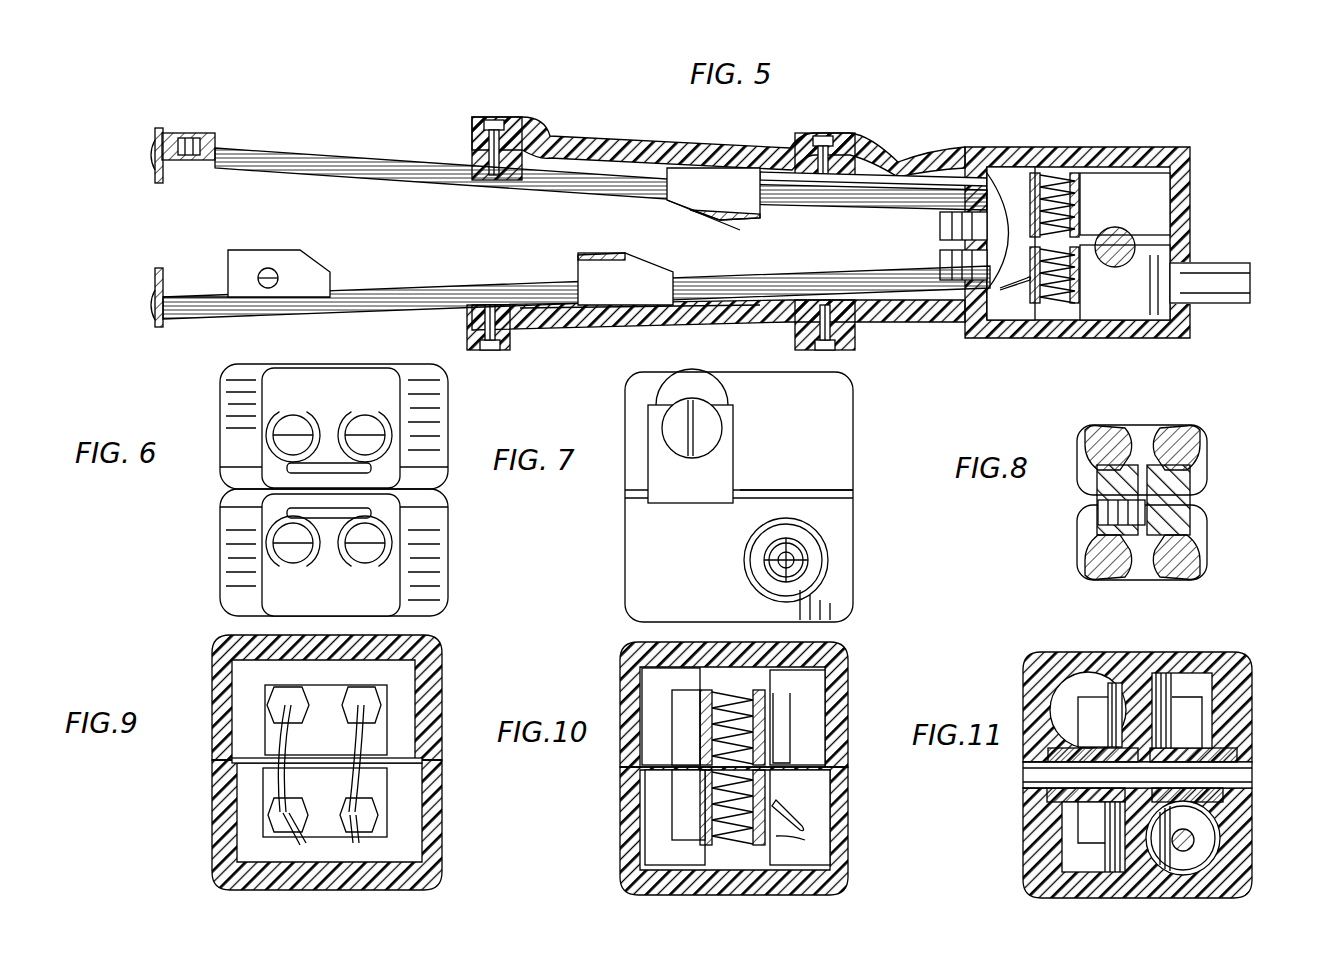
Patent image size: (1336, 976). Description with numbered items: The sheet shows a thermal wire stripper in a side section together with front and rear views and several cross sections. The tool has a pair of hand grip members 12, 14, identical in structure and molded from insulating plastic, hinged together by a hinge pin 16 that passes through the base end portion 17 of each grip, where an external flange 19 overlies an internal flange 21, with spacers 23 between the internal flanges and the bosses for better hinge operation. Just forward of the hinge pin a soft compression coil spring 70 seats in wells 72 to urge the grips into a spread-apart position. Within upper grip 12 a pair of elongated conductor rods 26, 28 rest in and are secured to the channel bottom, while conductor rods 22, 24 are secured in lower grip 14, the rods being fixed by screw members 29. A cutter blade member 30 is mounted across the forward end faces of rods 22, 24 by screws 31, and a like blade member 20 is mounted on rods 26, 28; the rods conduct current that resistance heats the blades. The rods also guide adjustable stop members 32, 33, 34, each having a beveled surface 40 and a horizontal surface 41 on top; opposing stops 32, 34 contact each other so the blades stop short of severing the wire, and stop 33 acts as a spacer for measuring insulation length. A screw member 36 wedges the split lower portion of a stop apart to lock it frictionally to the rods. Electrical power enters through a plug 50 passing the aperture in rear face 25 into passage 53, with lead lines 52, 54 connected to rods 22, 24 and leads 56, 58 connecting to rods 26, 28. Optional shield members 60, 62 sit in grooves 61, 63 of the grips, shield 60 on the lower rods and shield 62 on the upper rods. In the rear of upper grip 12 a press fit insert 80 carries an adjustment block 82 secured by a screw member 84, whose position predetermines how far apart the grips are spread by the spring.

In FIG. 5, the hand grip member 12 is at (612, 148).
In FIG. 6, the hand grip member 12 is at (222, 393).
In FIG. 7, the hand grip member 12 is at (627, 392).
In FIG. 9, the hand grip member 12 is at (442, 680).
In FIG. 10, the hand grip member 12 is at (848, 662).
In FIG. 11, the hand grip member 12 is at (1025, 665).
In FIG. 5, the hand grip member 14 is at (620, 330).
In FIG. 6, the hand grip member 14 is at (222, 570).
In FIG. 7, the hand grip member 14 is at (627, 550).
In FIG. 9, the hand grip member 14 is at (442, 835).
In FIG. 10, the hand grip member 14 is at (620, 866).
In FIG. 11, the hand grip member 14 is at (1025, 873).
In FIG. 5, the hinge pin 16 is at (1112, 262).
In FIG. 11, the hinge pin 16 is at (1252, 775).
In FIG. 5, the base end portion 17 is at (1075, 147).
In FIG. 6, the base end portion 17 is at (325, 364).
In FIG. 7, the base end portion 17 is at (660, 620).
In FIG. 9, the base end portion 17 is at (250, 636).
In FIG. 10, the base end portion 17 is at (640, 643).
In FIG. 11, the base end portion 17 is at (1132, 634).
In FIG. 9, the external flange 19 is at (212, 780).
In FIG. 10, the external flange 19 is at (620, 770).
In FIG. 11, the external flange 19 is at (1252, 753).
In FIG. 5, the blade member 20 is at (160, 168).
In FIG. 6, the blade member 20 is at (264, 472).
In FIG. 8, the blade member 20 is at (1208, 468).
In FIG. 11, the internal flange 21 is at (1048, 758).
In FIG. 8, the conductor rod 22 is at (1175, 578).
In FIG. 9, the conductor rod 22 is at (378, 812).
In FIG. 5, the spacer 23 is at (1135, 240).
In FIG. 11, the spacer 23 is at (1202, 742).
In FIG. 5, the conductor rod 24 is at (395, 268).
In FIG. 8, the conductor rod 24 is at (1105, 578).
In FIG. 9, the conductor rod 24 is at (296, 800).
In FIG. 5, the rear face 25 is at (1183, 255).
In FIG. 7, the rear face 25 is at (875, 512).
In FIG. 8, the conductor rod 26 is at (1182, 428).
In FIG. 9, the conductor rod 26 is at (365, 688).
In FIG. 5, the conductor rod 28 is at (344, 152).
In FIG. 8, the conductor rod 28 is at (1105, 428).
In FIG. 9, the conductor rod 28 is at (290, 688).
In FIG. 5, the screw member 29 is at (492, 120).
In FIG. 5, the cutter blade member 30 is at (153, 280).
In FIG. 6, the cutter blade member 30 is at (264, 512).
In FIG. 8, the cutter blade member 30 is at (1208, 537).
In FIG. 5, the screw 31 is at (153, 143).
In FIG. 6, the screw 31 is at (340, 398).
In FIG. 5, the stop member 32 is at (578, 268).
In FIG. 5, the stop member 33 is at (248, 250).
In FIG. 8, the stop member 33 is at (1190, 508).
In FIG. 5, the stop member 34 is at (760, 212).
In FIG. 5, the screw member 36 is at (312, 248).
In FIG. 8, the screw member 36 is at (1100, 512).
In FIG. 5, the beveled surface 40 is at (668, 202).
In FIG. 5, the horizontal surface 41 is at (745, 225).
In FIG. 5, the plug 50 is at (1210, 305).
In FIG. 7, the plug 50 is at (745, 562).
In FIG. 11, the plug 50 is at (1222, 858).
In FIG. 5, the lead line 52 is at (1015, 284).
In FIG. 9, the lead line 52 is at (360, 842).
In FIG. 10, the lead line 52 is at (805, 828).
In FIG. 11, the passageway 53 is at (1055, 697).
In FIG. 9, the lead line 54 is at (300, 842).
In FIG. 10, the lead line 54 is at (805, 840).
In FIG. 5, the lead 56 is at (1020, 210).
In FIG. 9, the lead 56 is at (358, 778).
In FIG. 9, the lead 58 is at (290, 740).
In FIG. 5, the shield member 60 is at (942, 262).
In FIG. 9, the shield member 60 is at (268, 790).
In FIG. 10, the shield member 60 is at (785, 800).
In FIG. 5, the groove 61 is at (985, 165).
In FIG. 5, the shield member 62 is at (942, 226).
In FIG. 9, the shield member 62 is at (272, 737).
In FIG. 10, the shield member 62 is at (790, 706).
In FIG. 5, the groove 63 is at (965, 165).
In FIG. 5, the compression coil spring 70 is at (1080, 188).
In FIG. 10, the compression coil spring 70 is at (765, 698).
In FIG. 5, the well 72 is at (1075, 208).
In FIG. 10, the well 72 is at (732, 690).
In FIG. 7, the press fit insert 80 is at (705, 395).
In FIG. 7, the adjustment block 82 is at (735, 458).
In FIG. 7, the screw member 84 is at (712, 425).